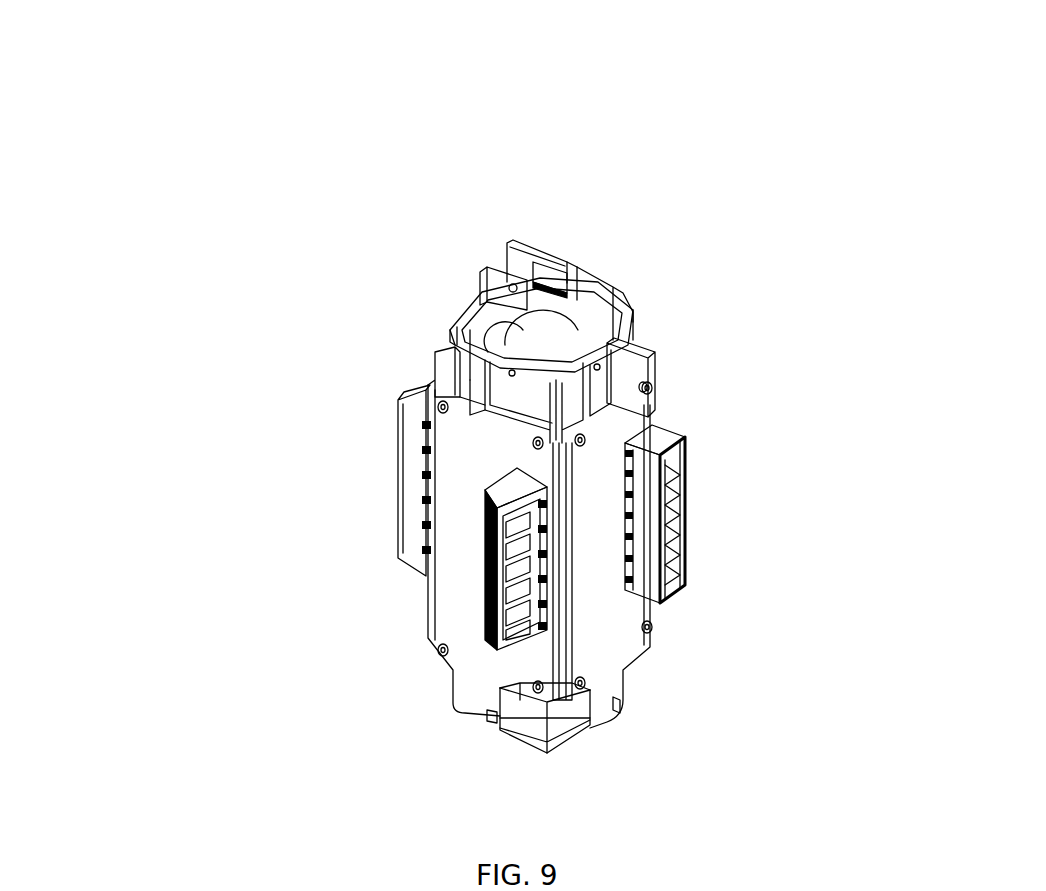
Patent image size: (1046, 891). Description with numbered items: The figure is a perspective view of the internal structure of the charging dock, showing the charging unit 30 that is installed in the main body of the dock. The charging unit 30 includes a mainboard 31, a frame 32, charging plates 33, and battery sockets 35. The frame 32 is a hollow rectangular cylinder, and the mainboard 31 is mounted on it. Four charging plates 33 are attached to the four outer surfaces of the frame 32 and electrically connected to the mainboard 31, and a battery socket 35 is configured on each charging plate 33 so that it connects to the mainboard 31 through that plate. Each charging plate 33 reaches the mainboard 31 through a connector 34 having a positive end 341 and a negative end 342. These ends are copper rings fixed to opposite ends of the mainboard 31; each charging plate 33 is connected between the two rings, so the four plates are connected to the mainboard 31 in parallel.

The charging unit 30 is at (428, 106).
The mainboard 31 is at (595, 290).
The frame 32 is at (640, 366).
The charging plate 33 is at (628, 412).
The connector 34 is at (165, 262).
The positive end 341 is at (458, 327).
The negative end 342 is at (500, 722).
The battery socket 35 is at (687, 526).